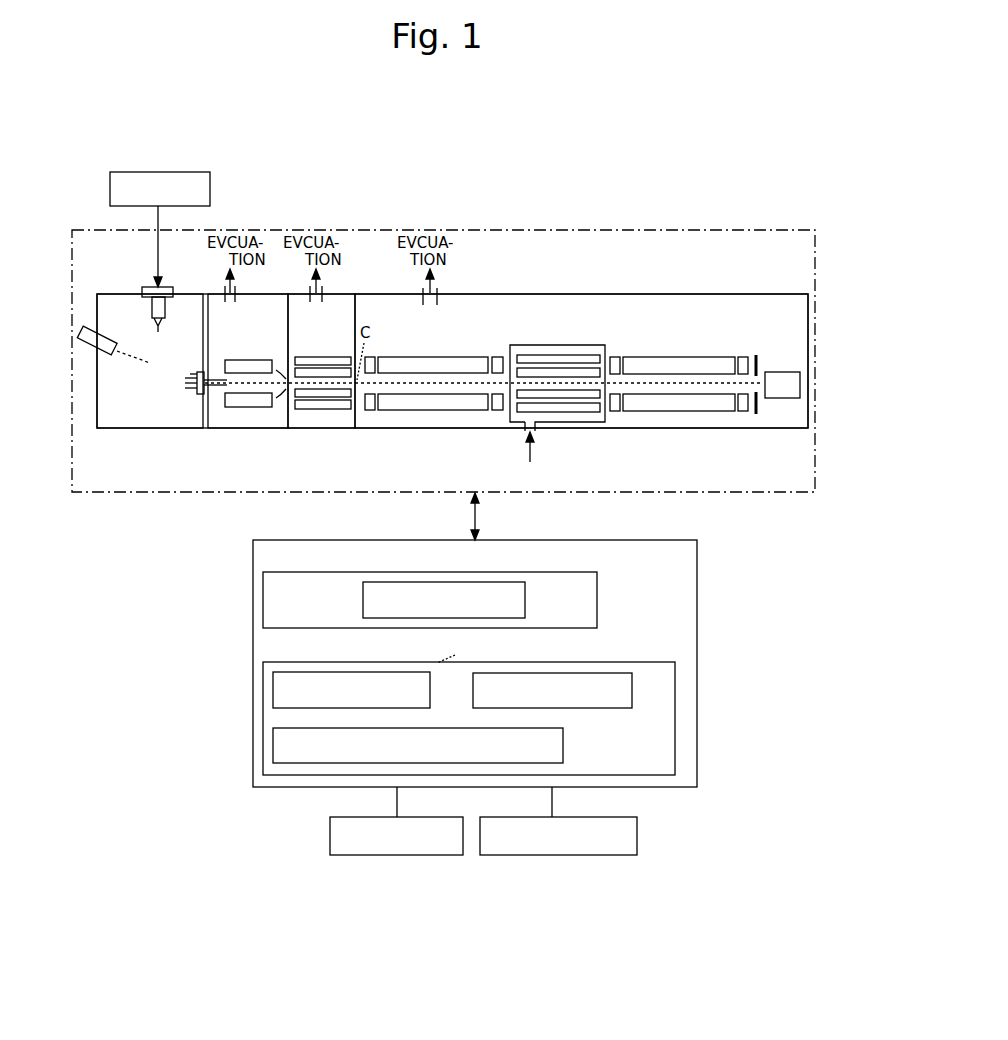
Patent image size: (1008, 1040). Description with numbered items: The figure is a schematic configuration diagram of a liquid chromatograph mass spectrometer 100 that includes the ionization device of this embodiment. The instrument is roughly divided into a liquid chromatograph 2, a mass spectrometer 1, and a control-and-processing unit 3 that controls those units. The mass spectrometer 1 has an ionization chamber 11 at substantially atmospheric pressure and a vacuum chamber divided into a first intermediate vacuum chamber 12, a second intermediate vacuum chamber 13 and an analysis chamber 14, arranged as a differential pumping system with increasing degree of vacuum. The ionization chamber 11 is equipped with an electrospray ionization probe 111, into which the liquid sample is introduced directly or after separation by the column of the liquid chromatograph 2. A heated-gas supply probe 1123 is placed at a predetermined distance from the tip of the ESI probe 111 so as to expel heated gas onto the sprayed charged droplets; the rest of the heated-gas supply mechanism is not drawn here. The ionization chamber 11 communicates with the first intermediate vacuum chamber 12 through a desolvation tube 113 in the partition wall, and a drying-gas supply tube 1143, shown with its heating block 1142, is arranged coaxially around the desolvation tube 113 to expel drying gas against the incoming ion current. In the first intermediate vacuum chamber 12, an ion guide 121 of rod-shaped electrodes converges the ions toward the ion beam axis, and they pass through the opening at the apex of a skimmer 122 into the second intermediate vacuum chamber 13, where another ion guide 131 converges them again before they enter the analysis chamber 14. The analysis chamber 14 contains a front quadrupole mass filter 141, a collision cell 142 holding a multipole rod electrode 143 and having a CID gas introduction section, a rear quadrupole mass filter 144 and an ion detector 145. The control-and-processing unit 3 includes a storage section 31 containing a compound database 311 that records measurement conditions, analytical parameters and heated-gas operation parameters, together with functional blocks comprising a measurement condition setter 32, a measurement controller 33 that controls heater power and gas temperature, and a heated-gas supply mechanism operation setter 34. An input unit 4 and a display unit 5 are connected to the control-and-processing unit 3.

The liquid chromatograph mass spectrometer 100 is at (735, 160).
The mass spectrometer 1 is at (634, 231).
The liquid chromatograph 2 is at (211, 190).
The ionization chamber 11 is at (113, 421).
The first intermediate vacuum chamber 12 is at (244, 421).
The second intermediate vacuum chamber 13 is at (298, 421).
The analysis chamber 14 is at (389, 421).
The electrospray ionization (ESI) probe 111 is at (170, 289).
The desolvation tube 113 is at (196, 388).
The heated-gas supply probe 1123 is at (115, 355).
The heating block 1142 is at (203, 396).
The drying-gas supply tube 1143 is at (192, 373).
The ion guide 121 is at (242, 358).
The skimmer 122 is at (280, 371).
The ion guide 131 is at (306, 357).
The front quadrupole mass filter 141 is at (455, 356).
The collision cell 142 is at (570, 351).
The multipole rod electrode 143 is at (530, 355).
The rear quadrupole mass filter 144 is at (688, 357).
The ion detector 145 is at (782, 372).
The control-and-processing unit 3 is at (697, 598).
The storage section 31 is at (598, 614).
The compound database 311 is at (526, 602).
The measurement condition setter 32 is at (274, 690).
The measurement controller 33 is at (629, 688).
The heated-gas supply mechanism operation setter 34 is at (275, 748).
The input unit 4 is at (420, 858).
The display unit 5 is at (575, 858).